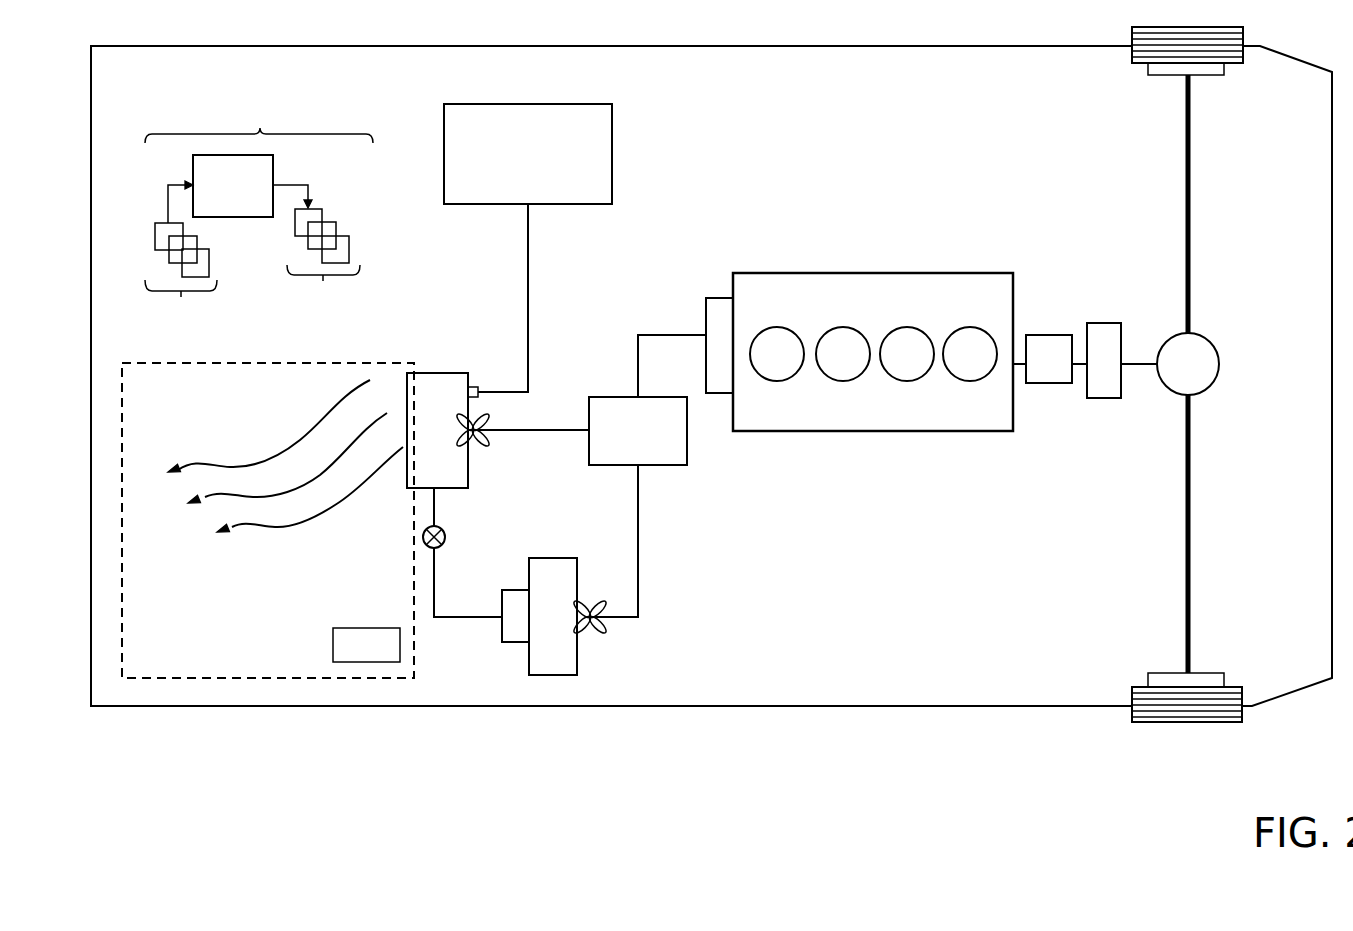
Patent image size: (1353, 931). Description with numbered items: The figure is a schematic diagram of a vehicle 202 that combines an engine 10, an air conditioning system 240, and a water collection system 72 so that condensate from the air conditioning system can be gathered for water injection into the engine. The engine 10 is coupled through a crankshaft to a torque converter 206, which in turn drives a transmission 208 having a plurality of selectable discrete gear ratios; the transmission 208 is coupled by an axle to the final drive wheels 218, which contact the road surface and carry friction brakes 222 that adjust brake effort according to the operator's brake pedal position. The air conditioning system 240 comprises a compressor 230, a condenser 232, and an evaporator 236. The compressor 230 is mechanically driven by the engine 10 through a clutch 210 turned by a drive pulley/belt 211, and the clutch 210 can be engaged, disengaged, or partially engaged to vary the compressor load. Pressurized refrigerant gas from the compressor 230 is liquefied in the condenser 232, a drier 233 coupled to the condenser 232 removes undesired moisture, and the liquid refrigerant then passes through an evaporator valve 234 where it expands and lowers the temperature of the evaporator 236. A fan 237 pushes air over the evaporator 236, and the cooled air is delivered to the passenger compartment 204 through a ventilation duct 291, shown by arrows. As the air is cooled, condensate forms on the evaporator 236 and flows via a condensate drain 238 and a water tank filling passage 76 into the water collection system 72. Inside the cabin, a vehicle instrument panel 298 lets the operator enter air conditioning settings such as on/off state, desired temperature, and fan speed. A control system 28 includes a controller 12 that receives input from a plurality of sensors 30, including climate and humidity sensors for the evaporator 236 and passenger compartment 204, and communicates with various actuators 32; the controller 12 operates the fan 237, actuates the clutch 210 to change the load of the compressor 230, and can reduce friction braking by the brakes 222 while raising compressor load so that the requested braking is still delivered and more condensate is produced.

The vehicle 202 is at (700, 46).
The friction brakes 222 is at (1225, 68).
The final drive/wheels 218 is at (1238, 660).
The control system 28 is at (259, 109).
The controller 12 is at (240, 189).
The sensors 30 is at (565, 302).
The actuators 32 is at (325, 266).
The water collection system 72 is at (528, 154).
The water tank filling passage 76 is at (529, 265).
The engine 10 is at (945, 352).
The clutch 210 is at (720, 298).
The drive pulley/belt 211 is at (663, 335).
The torque converter 206 is at (1038, 383).
The transmission 208 is at (1107, 323).
The compressor 230 is at (580, 507).
The evaporator 236 is at (454, 495).
The condensate drain 238 is at (470, 383).
The fan 237 is at (488, 450).
The evaporator valve 234 is at (447, 537).
The condenser 232 is at (568, 616).
The drier 233 is at (517, 643).
The air conditioning system 240 is at (618, 662).
The passenger compartment 204 is at (268, 520).
The vehicle instrument panel 298 is at (366, 645).
The ventilation duct 291 is at (273, 427).